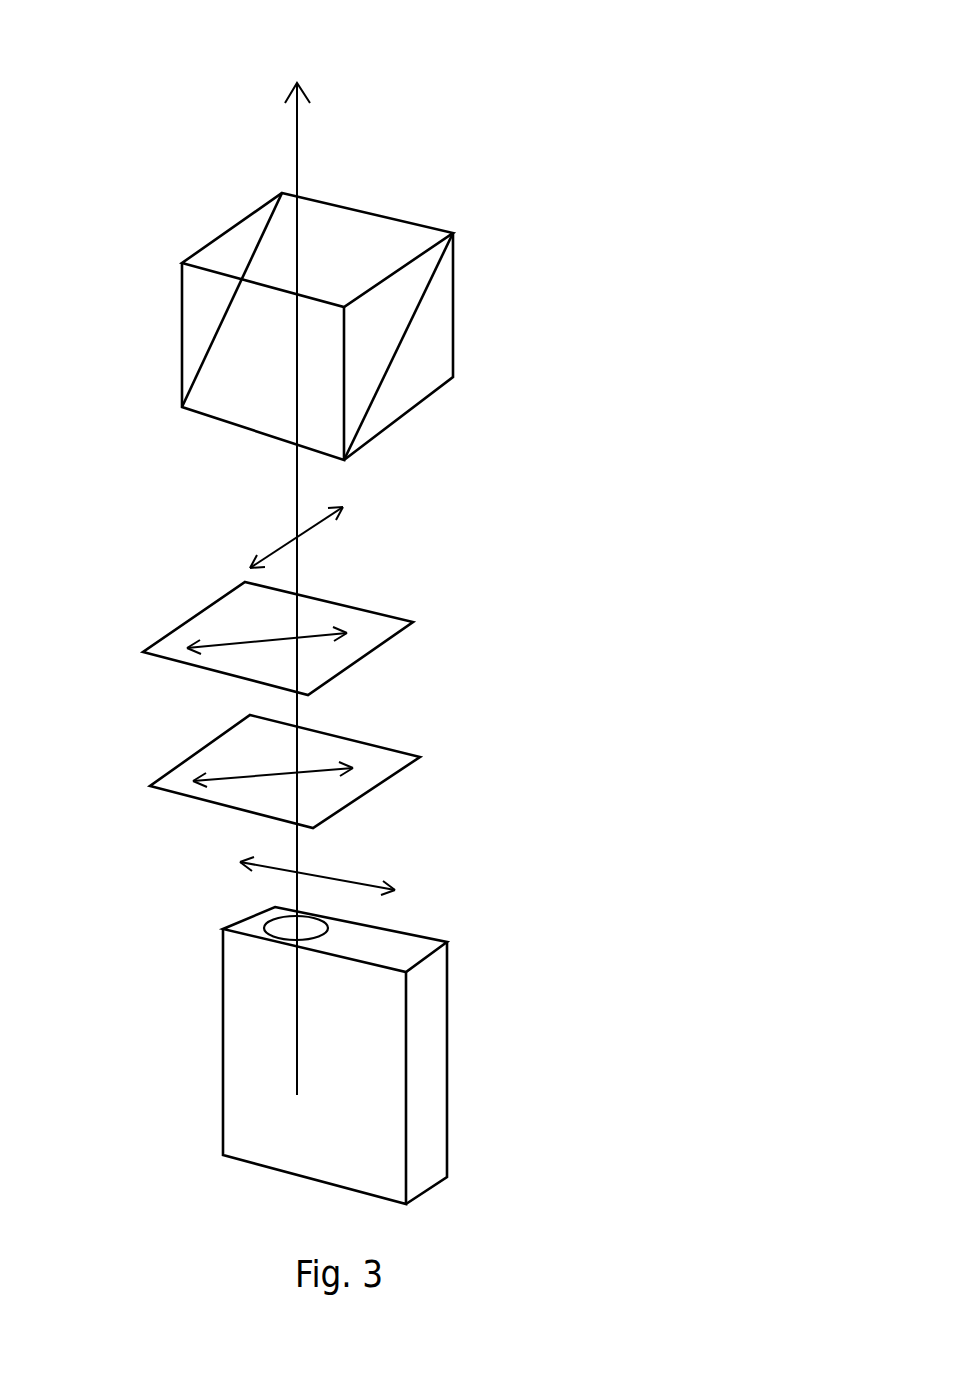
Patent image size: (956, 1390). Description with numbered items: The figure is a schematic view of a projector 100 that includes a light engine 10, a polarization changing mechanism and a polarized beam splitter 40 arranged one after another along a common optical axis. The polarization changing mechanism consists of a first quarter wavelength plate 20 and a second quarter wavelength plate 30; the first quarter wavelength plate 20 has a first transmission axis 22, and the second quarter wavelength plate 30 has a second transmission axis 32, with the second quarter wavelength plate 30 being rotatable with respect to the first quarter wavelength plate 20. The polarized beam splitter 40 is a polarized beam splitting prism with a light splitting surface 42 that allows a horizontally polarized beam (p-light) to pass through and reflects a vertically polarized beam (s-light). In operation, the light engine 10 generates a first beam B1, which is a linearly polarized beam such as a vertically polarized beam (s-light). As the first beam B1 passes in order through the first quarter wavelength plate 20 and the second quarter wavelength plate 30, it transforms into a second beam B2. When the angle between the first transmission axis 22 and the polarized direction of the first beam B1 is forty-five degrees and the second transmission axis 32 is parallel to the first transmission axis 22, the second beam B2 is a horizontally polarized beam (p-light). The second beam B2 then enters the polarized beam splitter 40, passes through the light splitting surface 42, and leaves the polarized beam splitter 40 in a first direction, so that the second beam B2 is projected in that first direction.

The projector 100 is at (597, 32).
The light engine 10 is at (427, 1097).
The first quarter wavelength plate 20 is at (393, 758).
The first transmission axis 22 is at (232, 775).
The second quarter wavelength plate 30 is at (382, 627).
The second transmission axis 32 is at (227, 642).
The polarized beam splitter 40 is at (435, 367).
The light splitting surface 42 is at (400, 288).
The first beam B1 is at (297, 900).
The second beam B2 is at (297, 490).